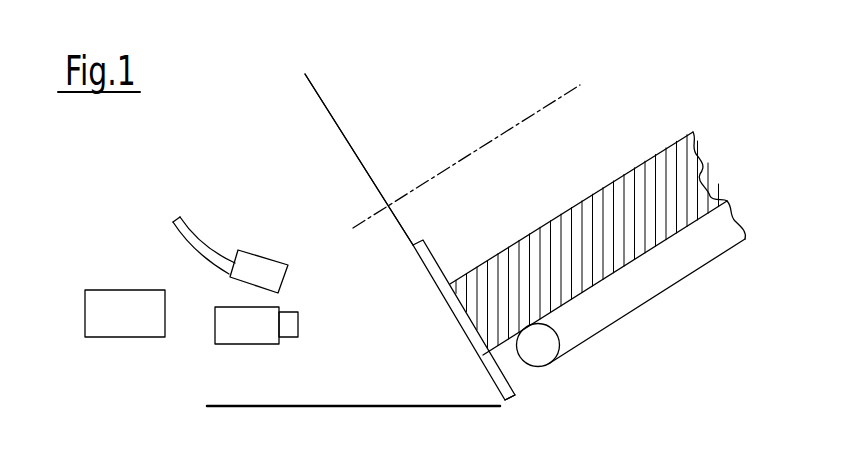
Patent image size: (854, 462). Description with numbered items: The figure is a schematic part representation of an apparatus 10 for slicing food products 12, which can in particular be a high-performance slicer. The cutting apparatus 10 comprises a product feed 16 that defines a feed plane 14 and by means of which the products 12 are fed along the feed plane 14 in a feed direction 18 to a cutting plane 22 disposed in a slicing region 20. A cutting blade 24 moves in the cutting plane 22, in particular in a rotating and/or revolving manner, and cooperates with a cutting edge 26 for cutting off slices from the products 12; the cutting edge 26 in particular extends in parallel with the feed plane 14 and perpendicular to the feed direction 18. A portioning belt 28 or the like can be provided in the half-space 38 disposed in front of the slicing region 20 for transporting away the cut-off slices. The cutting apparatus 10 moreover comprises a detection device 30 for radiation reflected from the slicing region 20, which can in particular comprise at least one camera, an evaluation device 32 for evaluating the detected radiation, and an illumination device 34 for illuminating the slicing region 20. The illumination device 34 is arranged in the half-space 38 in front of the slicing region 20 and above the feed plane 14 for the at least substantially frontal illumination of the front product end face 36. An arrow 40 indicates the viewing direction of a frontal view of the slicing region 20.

The apparatus 10 is at (510, 66).
The food products 12 is at (622, 185).
The feed plane 14 is at (685, 226).
The product feed 16 is at (622, 320).
The feed direction 18 is at (492, 226).
The slicing region 20 is at (403, 292).
The cutting plane 22 is at (308, 88).
The cutting blade 24 is at (308, 88).
The cutting edge 26 is at (512, 397).
The portioning belt 28 is at (312, 403).
The detection device 30 is at (227, 335).
The evaluation device 32 is at (128, 325).
The illumination device 34 is at (250, 262).
The front product end face 36 is at (465, 337).
The half-space 38 is at (326, 207).
The arrow 40 is at (414, 353).